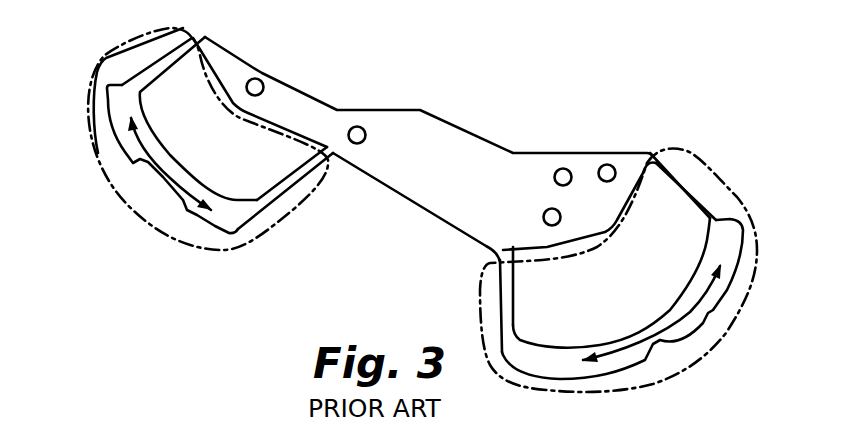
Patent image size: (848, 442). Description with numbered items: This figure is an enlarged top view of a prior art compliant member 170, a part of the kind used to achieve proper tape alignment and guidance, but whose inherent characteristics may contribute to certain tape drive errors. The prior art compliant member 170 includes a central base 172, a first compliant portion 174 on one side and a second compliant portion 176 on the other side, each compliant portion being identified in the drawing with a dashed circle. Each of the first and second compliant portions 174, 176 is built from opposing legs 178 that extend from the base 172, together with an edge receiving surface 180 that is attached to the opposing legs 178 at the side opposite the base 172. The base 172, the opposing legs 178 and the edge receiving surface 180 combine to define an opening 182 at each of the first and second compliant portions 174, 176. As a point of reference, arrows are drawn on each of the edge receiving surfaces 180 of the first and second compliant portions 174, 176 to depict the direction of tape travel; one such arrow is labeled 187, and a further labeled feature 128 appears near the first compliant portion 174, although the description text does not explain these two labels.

The prior art compliant member 170 is at (684, 88).
The base 172 is at (480, 140).
The first compliant portion 174 is at (178, 128).
The second compliant portion 176 is at (703, 163).
The opposing legs 178 is at (300, 180).
The edge receiving surface 180 is at (633, 356).
The opening 182 is at (253, 180).
The bending direction arrow 187 is at (110, 105).
The fold line 128 is at (162, 60).